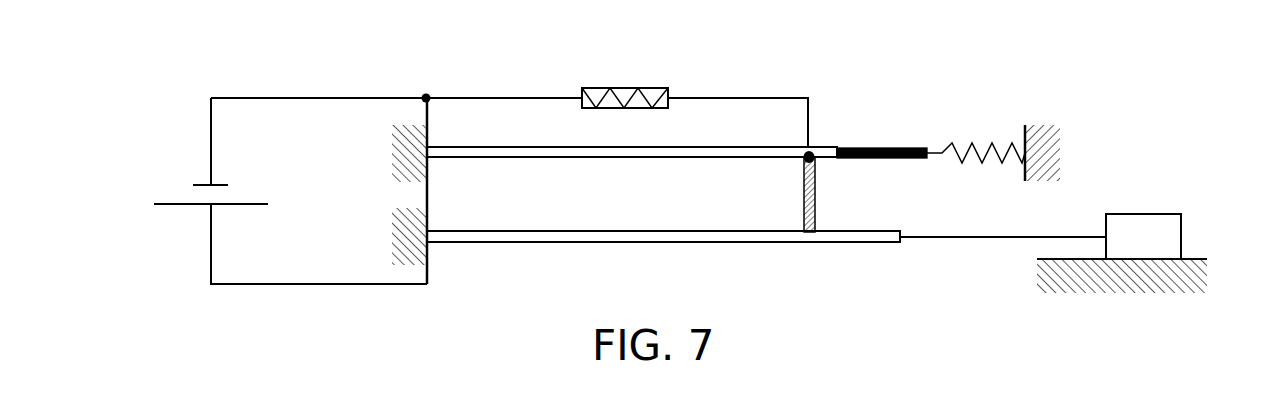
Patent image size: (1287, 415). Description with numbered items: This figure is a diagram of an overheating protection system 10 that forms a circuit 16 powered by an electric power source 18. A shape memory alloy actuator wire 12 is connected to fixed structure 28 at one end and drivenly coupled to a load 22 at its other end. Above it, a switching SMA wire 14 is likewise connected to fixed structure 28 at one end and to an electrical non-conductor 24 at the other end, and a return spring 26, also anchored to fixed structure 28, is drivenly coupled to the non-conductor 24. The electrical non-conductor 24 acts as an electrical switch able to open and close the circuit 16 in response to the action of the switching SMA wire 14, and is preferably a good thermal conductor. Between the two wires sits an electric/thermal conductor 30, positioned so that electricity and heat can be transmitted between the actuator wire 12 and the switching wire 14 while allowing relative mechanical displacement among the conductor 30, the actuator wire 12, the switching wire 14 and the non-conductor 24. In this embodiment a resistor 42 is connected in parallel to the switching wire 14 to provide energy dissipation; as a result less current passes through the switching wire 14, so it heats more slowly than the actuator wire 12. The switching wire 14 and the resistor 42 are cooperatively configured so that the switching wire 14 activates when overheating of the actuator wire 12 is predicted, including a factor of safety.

The overheating protection system 10 is at (1112, 68).
The shape memory alloy actuator wire 12 is at (837, 243).
The switching SMA wire 14 is at (760, 147).
The circuit 16 is at (346, 99).
The electric power source 18 is at (182, 206).
The load 22 is at (1181, 237).
The electrical non-conductor 24 is at (897, 148).
The return spring 26 is at (998, 145).
The fixed structure 28 is at (392, 231).
The electric/thermal conductor 30 is at (803, 197).
The resistor 42 is at (633, 88).